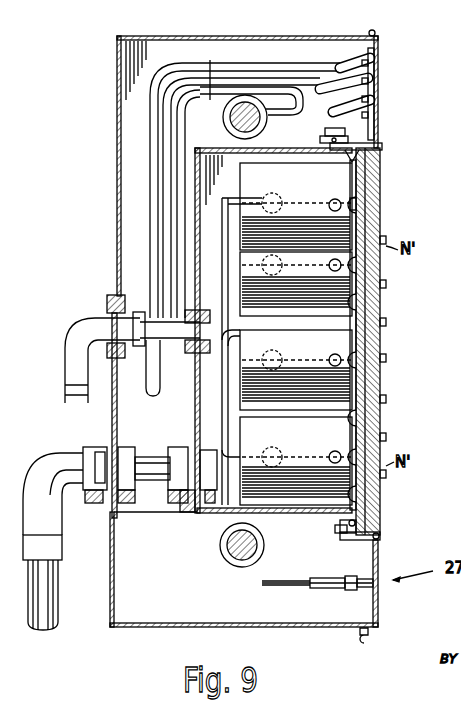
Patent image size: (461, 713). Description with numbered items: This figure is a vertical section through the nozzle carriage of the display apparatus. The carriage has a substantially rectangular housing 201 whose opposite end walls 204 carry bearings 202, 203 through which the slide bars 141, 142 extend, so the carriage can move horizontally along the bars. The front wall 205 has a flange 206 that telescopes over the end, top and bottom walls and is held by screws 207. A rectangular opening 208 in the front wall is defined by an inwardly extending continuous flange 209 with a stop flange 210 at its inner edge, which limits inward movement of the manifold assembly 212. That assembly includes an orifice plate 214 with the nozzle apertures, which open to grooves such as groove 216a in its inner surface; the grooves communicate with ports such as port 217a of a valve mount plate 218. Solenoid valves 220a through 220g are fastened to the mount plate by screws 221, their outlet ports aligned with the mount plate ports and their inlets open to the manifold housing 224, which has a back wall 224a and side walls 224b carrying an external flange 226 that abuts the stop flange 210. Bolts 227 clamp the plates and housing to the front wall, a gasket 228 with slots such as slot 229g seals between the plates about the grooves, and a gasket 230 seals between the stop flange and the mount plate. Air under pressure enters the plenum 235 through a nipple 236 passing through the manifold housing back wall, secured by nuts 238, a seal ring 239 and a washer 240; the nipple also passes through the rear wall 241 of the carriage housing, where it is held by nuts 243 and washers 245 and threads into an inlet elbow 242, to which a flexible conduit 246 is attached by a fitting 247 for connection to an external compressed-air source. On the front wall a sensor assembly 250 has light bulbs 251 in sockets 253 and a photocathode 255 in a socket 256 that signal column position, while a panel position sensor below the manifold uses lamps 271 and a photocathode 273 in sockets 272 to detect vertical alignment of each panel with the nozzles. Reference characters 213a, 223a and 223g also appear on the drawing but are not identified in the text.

The housing 201 is at (124, 36).
The end walls 204 is at (208, 52).
The chamber or plenum 235 is at (200, 418).
The side walls 224b is at (222, 150).
The slide bar 141 is at (237, 111).
The bearing 202 is at (229, 124).
The solenoid valve 220a is at (243, 165).
The manifold housing 224 is at (195, 173).
The back wall 224a is at (195, 212).
The socket 253 is at (345, 66).
The socket 256 is at (355, 88).
The front wall 205 is at (384, 60).
The electric light bulb 251 is at (375, 62).
The photocathode 255 is at (375, 80).
The sensor assembly 250 is at (375, 112).
The flange 206 is at (367, 40).
The screws 207 is at (378, 30).
The inwardly extending continuous flange 209 is at (342, 131).
The stop flange 210 is at (340, 142).
The rectangular opening 208 is at (382, 146).
The manifold assembly 212 is at (382, 176).
The valve mount plate 218 is at (385, 340).
The screws 221 is at (392, 219).
The groove 216a is at (370, 206).
The flange 213a is at (386, 242).
The valve mount port 217a is at (352, 201).
The bolt 223a is at (330, 208).
The solenoid valve 220g is at (384, 421).
The bolt 223g is at (331, 455).
The slot 229g is at (385, 450).
The orifice plate 214 is at (383, 492).
The gasket 228 is at (383, 515).
The bolts 227 is at (382, 536).
The rear wall 241 is at (118, 246).
The nuts 243 is at (108, 450).
The inlet elbow 242 is at (45, 476).
The fitting 247 is at (60, 552).
The flexible conduit 246 is at (58, 630).
The washers 245 is at (110, 503).
The nipple 236 is at (142, 500).
The washer 240 is at (152, 500).
The gasket or seal ring 239 is at (186, 506).
The nuts 238 is at (176, 455).
The slide bar 142 is at (224, 544).
The bearing 203 is at (230, 562).
The flange 226 is at (336, 528).
The gasket 230 is at (356, 541).
The light bulb or lamp 271 is at (350, 590).
The socket 272 is at (380, 568).
The photocathode 273 is at (378, 585).